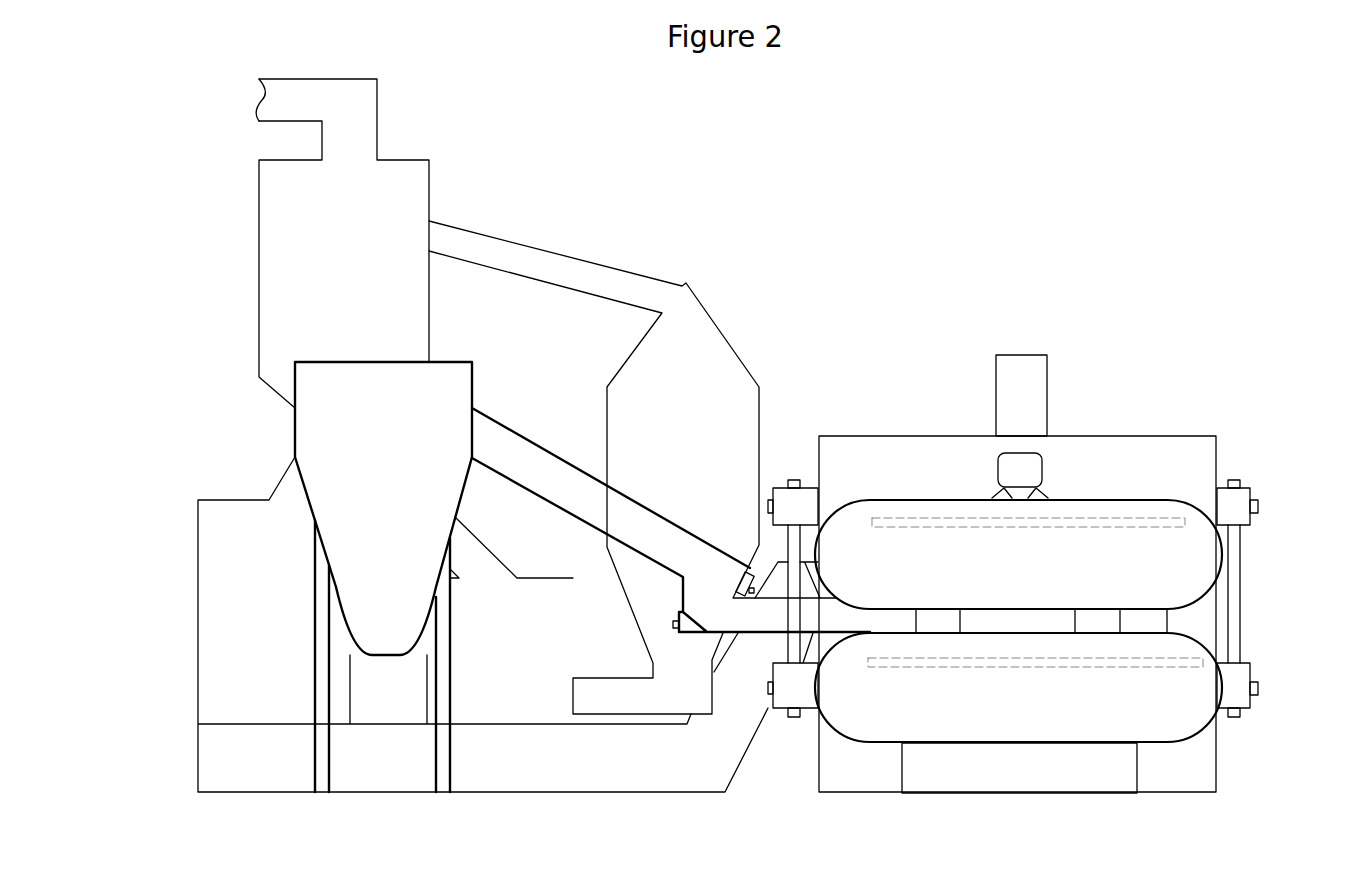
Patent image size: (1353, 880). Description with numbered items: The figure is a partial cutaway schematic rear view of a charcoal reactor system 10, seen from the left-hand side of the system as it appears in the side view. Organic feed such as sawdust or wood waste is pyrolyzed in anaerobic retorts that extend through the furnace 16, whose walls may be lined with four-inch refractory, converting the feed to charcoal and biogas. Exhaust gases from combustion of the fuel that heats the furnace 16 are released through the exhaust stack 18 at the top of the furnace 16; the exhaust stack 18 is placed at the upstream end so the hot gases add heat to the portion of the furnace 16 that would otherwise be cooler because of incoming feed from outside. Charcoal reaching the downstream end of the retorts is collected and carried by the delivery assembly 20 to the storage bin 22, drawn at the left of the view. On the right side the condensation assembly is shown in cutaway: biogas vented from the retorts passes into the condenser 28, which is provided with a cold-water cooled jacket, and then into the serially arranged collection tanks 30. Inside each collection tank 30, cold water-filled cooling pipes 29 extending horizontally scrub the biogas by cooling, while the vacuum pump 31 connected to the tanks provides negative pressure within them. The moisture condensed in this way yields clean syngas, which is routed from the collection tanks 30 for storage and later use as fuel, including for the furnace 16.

The charcoal reactor system 10 is at (737, 854).
The furnace 16 is at (1203, 436).
The exhaust stack 18 is at (1023, 355).
The delivery assembly 20 is at (641, 582).
The storage bin 22 is at (385, 362).
The condenser 28 is at (788, 652).
The cooling pipes 29 is at (913, 517).
The collection tank 30 is at (1193, 735).
The vacuum pump 31 is at (1043, 462).